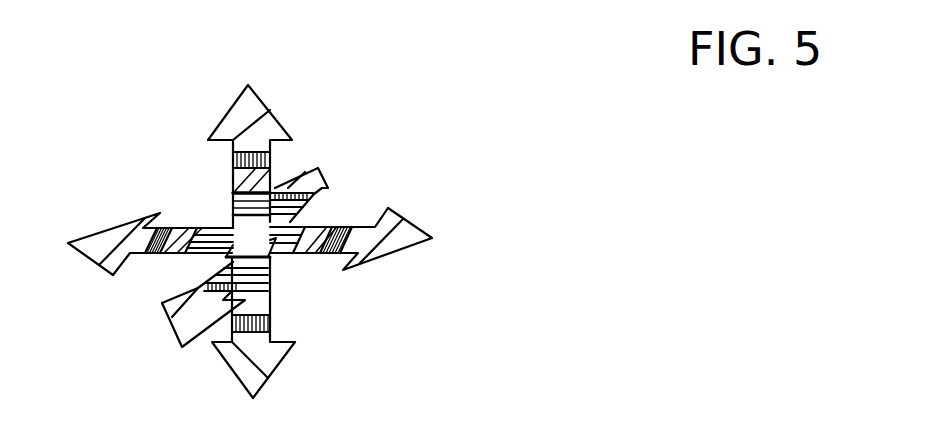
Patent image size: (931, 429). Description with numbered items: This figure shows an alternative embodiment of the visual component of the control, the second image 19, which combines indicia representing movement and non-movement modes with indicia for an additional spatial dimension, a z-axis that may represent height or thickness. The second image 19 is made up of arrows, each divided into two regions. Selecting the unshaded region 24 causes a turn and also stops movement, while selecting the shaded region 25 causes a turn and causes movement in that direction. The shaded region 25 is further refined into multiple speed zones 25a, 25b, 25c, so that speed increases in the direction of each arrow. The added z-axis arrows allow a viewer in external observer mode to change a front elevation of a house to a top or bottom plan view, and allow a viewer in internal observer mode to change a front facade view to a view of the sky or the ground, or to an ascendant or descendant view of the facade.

The second image 19 is at (283, 204).
The unshaded region 24 is at (217, 228).
The shaded region 25 is at (384, 173).
The speed zone 25a is at (355, 227).
The speed zone 25b is at (335, 227).
The speed zone 25c is at (297, 228).